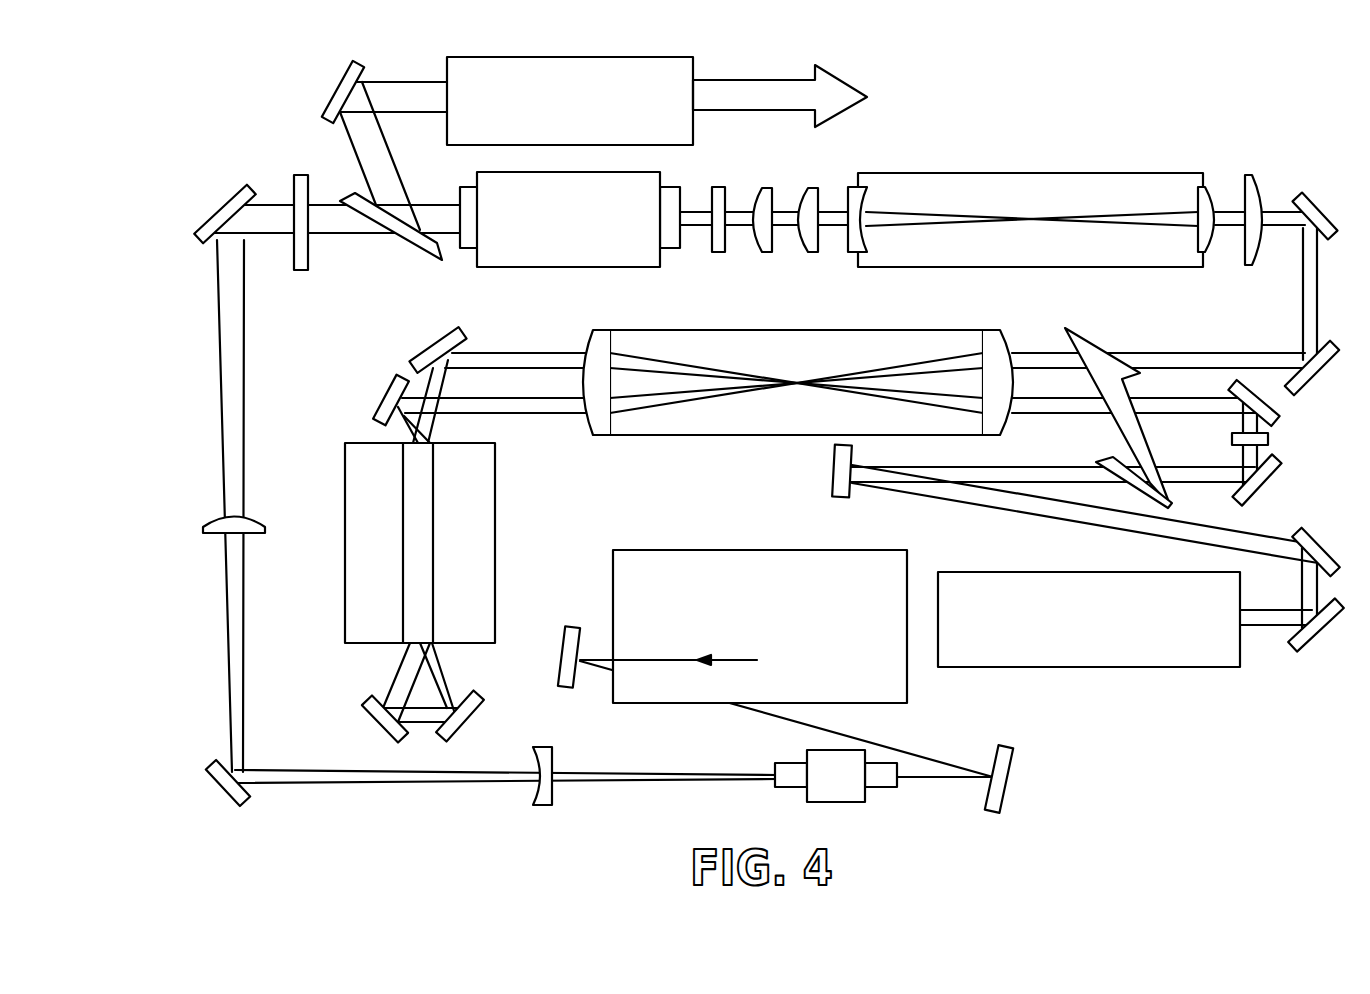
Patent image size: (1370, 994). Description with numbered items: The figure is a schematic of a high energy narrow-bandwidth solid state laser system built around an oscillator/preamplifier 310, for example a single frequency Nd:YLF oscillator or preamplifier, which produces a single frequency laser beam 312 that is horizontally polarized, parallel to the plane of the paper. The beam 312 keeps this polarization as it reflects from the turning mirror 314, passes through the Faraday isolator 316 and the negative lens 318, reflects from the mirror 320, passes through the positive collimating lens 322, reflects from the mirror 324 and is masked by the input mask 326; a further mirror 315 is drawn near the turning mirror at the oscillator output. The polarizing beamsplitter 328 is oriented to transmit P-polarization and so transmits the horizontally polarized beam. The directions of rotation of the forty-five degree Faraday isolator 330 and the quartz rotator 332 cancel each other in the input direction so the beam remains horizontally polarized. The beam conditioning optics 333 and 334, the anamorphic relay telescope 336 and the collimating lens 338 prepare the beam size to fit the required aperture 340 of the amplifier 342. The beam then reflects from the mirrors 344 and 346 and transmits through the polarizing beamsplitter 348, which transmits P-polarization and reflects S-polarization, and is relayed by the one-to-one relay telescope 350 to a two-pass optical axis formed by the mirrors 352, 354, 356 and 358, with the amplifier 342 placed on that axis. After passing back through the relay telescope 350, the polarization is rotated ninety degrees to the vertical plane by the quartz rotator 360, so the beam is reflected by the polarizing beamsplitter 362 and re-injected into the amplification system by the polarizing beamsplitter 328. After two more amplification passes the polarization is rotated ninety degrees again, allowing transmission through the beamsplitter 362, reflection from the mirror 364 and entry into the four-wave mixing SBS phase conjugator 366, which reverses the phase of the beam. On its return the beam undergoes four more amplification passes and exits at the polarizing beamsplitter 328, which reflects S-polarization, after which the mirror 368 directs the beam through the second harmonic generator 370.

The oscillator/preamplifier 310 is at (760, 606).
The single frequency laser beam 312 is at (757, 660).
The turning mirror 314 is at (556, 636).
The mirror 315 is at (1012, 761).
The Faraday isolator 316 is at (795, 760).
The negative lens 318 is at (578, 767).
The mirror 320 is at (251, 765).
The positive collimating lens 322 is at (257, 507).
The mirror 324 is at (225, 197).
The input mask 326 is at (289, 199).
The polarizing beamsplitter 328 is at (391, 236).
The 45° Faraday isolator 330 is at (570, 237).
The quartz rotator 332 is at (697, 241).
The beam conditioning optics 333 is at (755, 196).
The beam conditioning optics 334 is at (821, 196).
The anamorphic relay telescope 336 is at (1031, 204).
The collimating lens 338 is at (1244, 199).
The aperture 340 is at (413, 543).
The amplifier 342 is at (327, 545).
The mirror 344 is at (1318, 199).
The mirror 346 is at (1315, 382).
The polarizing beamsplitter 348 is at (1117, 404).
The 1:1 relay telescope 350 is at (798, 366).
The mirror 352 is at (363, 397).
The mirror 354 is at (475, 728).
The mirror 356 is at (360, 728).
The mirror 358 is at (421, 341).
The quartz rotator 360 is at (1289, 445).
The polarizing beamsplitter 362 is at (1091, 470).
The mirror 364 is at (797, 471).
The four-wave mixing SBS phase conjugator 366 is at (1089, 603).
The mirror 368 is at (307, 92).
The second harmonic generator 370 is at (657, 92).